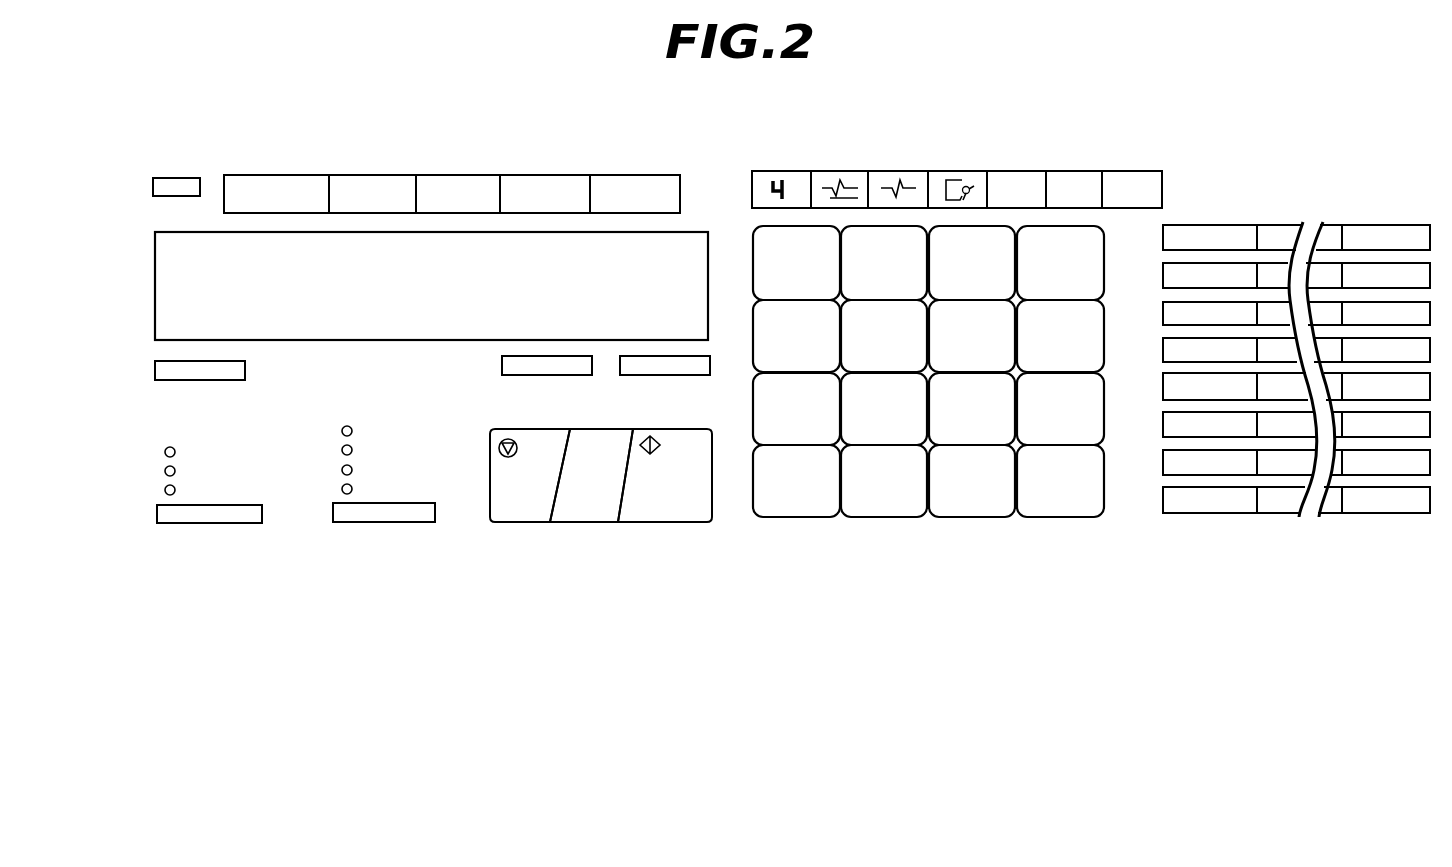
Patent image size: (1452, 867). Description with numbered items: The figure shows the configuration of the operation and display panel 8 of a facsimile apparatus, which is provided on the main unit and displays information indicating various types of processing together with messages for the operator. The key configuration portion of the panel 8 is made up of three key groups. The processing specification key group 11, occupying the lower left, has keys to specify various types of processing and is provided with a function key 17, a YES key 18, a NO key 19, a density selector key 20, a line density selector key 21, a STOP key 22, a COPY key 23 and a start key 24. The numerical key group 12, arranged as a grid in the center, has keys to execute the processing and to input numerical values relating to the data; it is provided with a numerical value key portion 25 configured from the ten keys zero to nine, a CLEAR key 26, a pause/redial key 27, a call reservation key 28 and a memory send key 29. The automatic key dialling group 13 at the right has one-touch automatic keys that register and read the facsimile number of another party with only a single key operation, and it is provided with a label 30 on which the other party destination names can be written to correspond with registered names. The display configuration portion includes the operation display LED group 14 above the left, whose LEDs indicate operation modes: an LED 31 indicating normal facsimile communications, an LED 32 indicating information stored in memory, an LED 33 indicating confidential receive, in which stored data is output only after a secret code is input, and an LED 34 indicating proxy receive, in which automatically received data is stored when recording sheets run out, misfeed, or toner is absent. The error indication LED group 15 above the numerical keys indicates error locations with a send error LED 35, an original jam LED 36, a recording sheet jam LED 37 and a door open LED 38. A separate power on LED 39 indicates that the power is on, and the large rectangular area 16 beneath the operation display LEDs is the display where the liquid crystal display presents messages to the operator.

The operation and display panel 8 is at (1262, 106).
The processing specification key group 11 is at (428, 546).
The numerical key group 12 is at (910, 543).
The automatic key dialling group 13 is at (1300, 527).
The operation display LED group 14 is at (618, 140).
The error indication LED group 15 is at (1066, 126).
The display 16 is at (157, 294).
The function key 17 is at (156, 372).
The YES key 18 is at (502, 364).
The NO key 19 is at (621, 372).
The density selector key 20 is at (158, 515).
The line density selector key 21 is at (334, 512).
The STOP key 22 is at (514, 428).
The COPY key 23 is at (599, 428).
The start key 24 is at (655, 428).
The numerical value key portion 25 is at (1019, 524).
The CLEAR key 26 is at (752, 252).
The pause/redial key 27 is at (755, 352).
The call reservation key 28 is at (752, 422).
The memory send key 29 is at (778, 518).
The label 30 is at (1268, 224).
The LED indicating normal facsimile communications 31 is at (292, 175).
The LED indicating information stored in memory 32 is at (383, 175).
The LED indicating confidential receive 33 is at (458, 175).
The LED indicating proxy receive 34 is at (547, 175).
The send error LED 35 is at (790, 171).
The original jam LED 36 is at (845, 171).
The recording sheet jam LED 37 is at (900, 171).
The door open LED 38 is at (956, 171).
The power on LED 39 is at (188, 177).